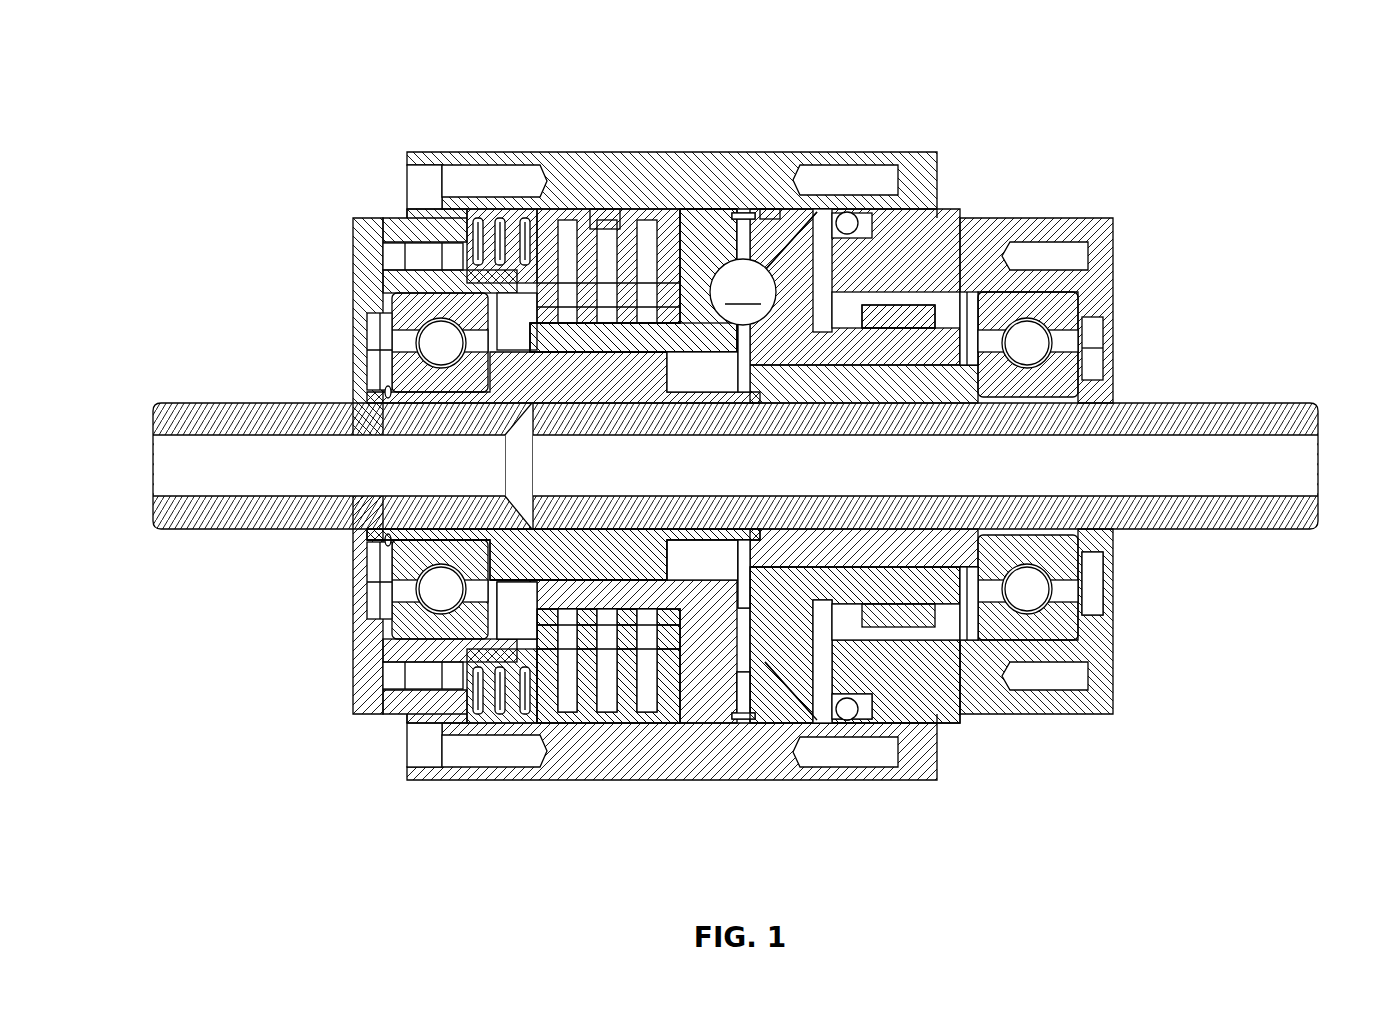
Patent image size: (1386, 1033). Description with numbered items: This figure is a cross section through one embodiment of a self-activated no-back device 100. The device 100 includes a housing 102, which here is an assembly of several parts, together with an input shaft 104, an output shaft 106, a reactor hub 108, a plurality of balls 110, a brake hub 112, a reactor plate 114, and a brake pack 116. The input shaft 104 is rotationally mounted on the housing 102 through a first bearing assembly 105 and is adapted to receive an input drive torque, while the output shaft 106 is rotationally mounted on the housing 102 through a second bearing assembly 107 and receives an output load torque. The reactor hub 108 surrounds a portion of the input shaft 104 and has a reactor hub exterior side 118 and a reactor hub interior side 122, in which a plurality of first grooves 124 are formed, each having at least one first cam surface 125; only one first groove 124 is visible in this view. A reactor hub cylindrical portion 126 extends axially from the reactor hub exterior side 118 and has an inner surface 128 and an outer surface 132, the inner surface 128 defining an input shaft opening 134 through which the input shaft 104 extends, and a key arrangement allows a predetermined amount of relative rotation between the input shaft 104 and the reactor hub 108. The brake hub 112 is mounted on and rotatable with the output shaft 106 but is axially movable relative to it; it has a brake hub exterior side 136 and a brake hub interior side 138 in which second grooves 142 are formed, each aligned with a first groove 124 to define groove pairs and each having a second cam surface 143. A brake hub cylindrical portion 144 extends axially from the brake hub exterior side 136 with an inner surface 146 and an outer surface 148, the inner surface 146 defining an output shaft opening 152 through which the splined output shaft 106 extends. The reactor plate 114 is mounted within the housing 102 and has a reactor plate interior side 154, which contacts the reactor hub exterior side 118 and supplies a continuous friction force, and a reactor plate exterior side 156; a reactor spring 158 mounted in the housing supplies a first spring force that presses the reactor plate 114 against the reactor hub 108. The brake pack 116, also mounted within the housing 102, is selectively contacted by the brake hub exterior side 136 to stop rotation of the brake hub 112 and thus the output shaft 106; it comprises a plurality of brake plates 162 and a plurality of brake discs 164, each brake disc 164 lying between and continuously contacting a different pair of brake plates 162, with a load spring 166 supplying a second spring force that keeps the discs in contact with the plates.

The self-activated no-back device 100 is at (258, 62).
The housing 102 is at (972, 218).
The input shaft 104 is at (1225, 403).
The first bearing assembly 105 is at (1040, 303).
The output shaft 106 is at (207, 403).
The second bearing assembly 107 is at (403, 307).
The reactor hub 108 is at (765, 235).
The balls 110 is at (743, 292).
The brake hub 112 is at (712, 262).
The reactor plate 114 is at (805, 285).
The brake pack 116 is at (548, 235).
The reactor hub exterior side 118 is at (917, 165).
The reactor hub interior side 122 is at (740, 212).
The first grooves 124 is at (772, 212).
The first cam surface 125 is at (848, 212).
The reactor hub cylindrical portion 126 is at (967, 300).
The inner surface 128 is at (966, 575).
The outer surface 132 is at (907, 555).
The input shaft opening 134 is at (990, 612).
The brake hub exterior side 136 is at (667, 690).
The brake hub interior side 138 is at (760, 707).
The second grooves 142 is at (700, 300).
The second cam surface 143 is at (655, 300).
The brake hub cylindrical portion 144 is at (525, 600).
The inner surface 146 is at (545, 585).
The outer surface 148 is at (630, 607).
The output shaft opening 152 is at (505, 590).
The reactor plate interior side 154 is at (808, 700).
The reactor plate exterior side 156 is at (833, 682).
The reactor spring 158 is at (828, 290).
The brake plates 162 is at (500, 240).
The brake discs 164 is at (600, 200).
The load spring 166 is at (470, 215).